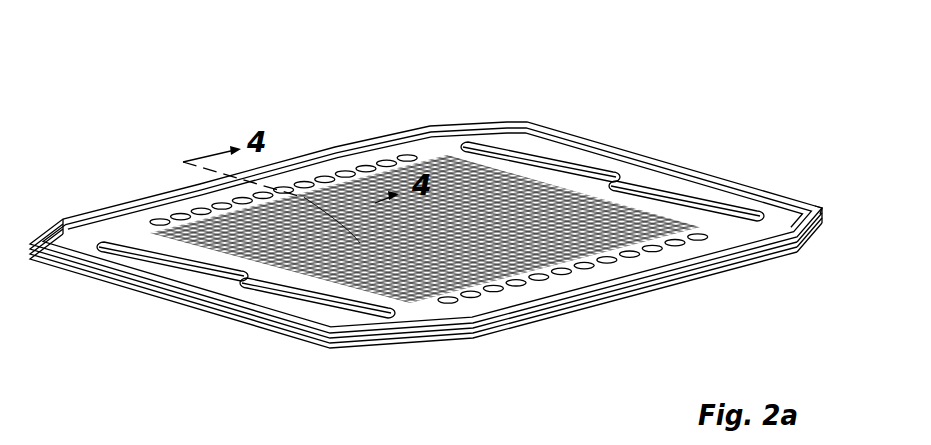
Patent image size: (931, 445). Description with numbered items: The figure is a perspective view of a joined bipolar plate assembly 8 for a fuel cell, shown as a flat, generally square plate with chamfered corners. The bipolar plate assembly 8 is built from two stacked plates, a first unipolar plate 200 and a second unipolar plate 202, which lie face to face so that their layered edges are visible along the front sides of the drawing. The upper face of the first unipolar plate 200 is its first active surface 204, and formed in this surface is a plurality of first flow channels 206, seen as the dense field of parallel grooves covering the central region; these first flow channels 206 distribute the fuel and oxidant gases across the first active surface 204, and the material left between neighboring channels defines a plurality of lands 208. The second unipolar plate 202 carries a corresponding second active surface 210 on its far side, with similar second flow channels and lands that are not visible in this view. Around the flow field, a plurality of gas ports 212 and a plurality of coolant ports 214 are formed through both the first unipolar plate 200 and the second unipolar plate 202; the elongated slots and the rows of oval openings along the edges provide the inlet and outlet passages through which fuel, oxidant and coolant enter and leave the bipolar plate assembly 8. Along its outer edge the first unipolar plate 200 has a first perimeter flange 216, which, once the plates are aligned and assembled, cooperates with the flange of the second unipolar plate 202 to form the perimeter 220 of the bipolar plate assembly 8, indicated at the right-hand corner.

The bipolar plate assembly 8 is at (556, 100).
The first unipolar plate 200 is at (656, 270).
The second unipolar plate 202 is at (584, 316).
The first active surface 204 is at (225, 209).
The first flow channels 206 is at (181, 226).
The lands 208 is at (207, 248).
The second active surface 210 is at (307, 293).
The gas ports 212 is at (487, 163).
The coolant ports 214 is at (407, 158).
The first perimeter flange 216 is at (818, 208).
The perimeter 220 is at (834, 233).